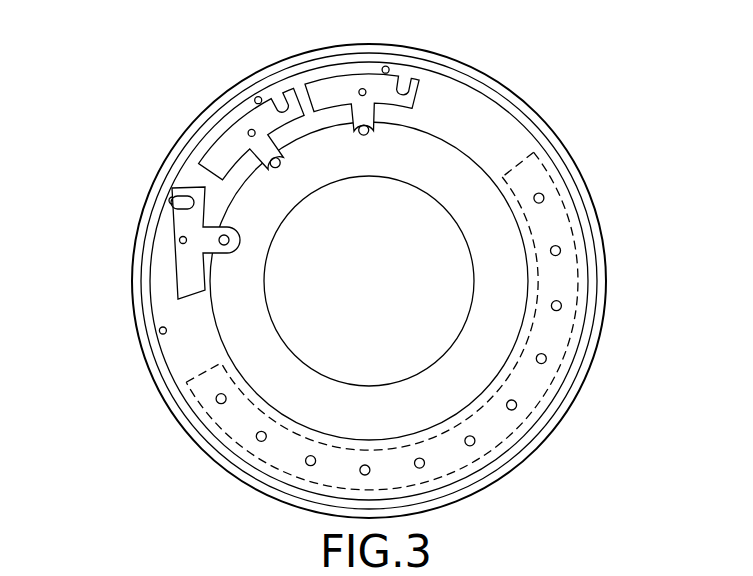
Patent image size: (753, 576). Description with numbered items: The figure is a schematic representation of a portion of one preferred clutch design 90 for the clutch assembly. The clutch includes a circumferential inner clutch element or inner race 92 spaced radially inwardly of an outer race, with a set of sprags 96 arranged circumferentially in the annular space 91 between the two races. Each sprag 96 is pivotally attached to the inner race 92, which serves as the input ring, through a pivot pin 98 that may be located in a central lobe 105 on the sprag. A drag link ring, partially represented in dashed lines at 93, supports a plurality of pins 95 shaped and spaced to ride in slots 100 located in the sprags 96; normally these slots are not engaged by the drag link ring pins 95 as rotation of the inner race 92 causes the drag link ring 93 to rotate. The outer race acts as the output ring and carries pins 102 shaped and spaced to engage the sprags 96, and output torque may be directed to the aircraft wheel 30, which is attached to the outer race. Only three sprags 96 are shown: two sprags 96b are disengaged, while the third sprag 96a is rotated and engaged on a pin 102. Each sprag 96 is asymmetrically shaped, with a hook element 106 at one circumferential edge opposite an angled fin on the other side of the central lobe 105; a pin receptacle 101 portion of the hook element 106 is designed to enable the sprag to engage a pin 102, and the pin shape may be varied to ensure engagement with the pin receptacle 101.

The aircraft wheel 30 is at (560, 145).
The clutch design 90 is at (131, 425).
The annular space 91 is at (476, 129).
The inner race 92 is at (493, 290).
The drag link ring 93 is at (533, 368).
The pins 95 is at (476, 441).
The sprags 96 is at (376, 565).
The engaged sprag 96a is at (183, 277).
The disengaged sprags 96b is at (259, 127).
The pivot pin 98 is at (238, 241).
The slots 100 is at (179, 240).
The pin receptacle 101 is at (196, 205).
The pins 102 is at (386, 65).
The central lobe 105 is at (285, 171).
The hook element 106 is at (183, 187).